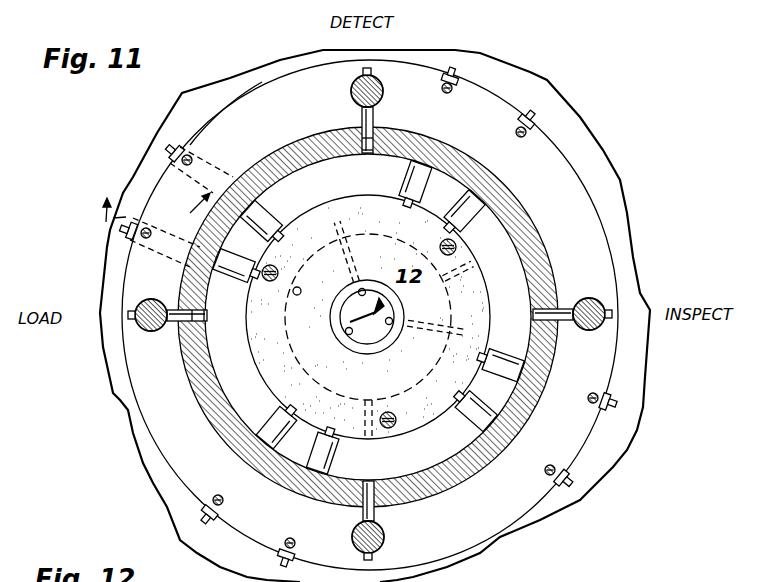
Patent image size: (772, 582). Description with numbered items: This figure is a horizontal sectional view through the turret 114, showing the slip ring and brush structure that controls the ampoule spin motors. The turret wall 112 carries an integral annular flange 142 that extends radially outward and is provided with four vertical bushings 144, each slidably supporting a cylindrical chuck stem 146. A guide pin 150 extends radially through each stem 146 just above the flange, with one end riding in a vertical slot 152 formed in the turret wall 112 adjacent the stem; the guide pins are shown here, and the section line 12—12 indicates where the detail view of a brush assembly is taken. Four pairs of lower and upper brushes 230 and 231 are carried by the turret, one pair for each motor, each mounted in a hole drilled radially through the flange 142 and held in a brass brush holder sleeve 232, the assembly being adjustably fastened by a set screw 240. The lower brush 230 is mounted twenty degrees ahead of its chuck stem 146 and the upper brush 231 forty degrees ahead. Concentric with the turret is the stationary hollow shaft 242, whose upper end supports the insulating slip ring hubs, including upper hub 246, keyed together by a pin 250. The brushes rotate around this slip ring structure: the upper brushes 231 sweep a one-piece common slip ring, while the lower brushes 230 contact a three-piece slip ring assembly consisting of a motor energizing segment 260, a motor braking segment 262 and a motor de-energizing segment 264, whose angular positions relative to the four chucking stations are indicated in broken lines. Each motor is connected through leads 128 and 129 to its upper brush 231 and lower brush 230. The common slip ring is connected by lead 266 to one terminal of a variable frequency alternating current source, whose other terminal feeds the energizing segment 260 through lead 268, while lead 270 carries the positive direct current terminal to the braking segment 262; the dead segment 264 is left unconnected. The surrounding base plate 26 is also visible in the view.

The section line 12— 12 is at (155, 207).
The base plate 26 is at (138, 455).
The turret wall 112 is at (200, 390).
The turret 114 is at (253, 84).
The lead 128 is at (548, 112).
The lead 129 is at (466, 70).
The annular flange 142 is at (124, 370).
The vertical bushing 144 is at (390, 535).
The chuck stem 146 is at (352, 91).
The guide pin 150 is at (362, 118).
The vertical slot 152 is at (370, 152).
The lower brush 230 is at (412, 205).
The upper brush 231 is at (283, 225).
The brush holder sleeve 232 is at (330, 460).
The set screw 240 is at (225, 503).
The stationary hollow shaft 242 is at (380, 353).
The upper slip ring hub 246 is at (458, 422).
The pin 250 is at (300, 289).
The motor energizing segment 260 is at (336, 203).
The motor braking segment 262 is at (486, 300).
The motor de-energizing segment 264 is at (270, 349).
The lead 266 is at (346, 329).
The lead 268 is at (366, 288).
The lead 270 is at (393, 320).